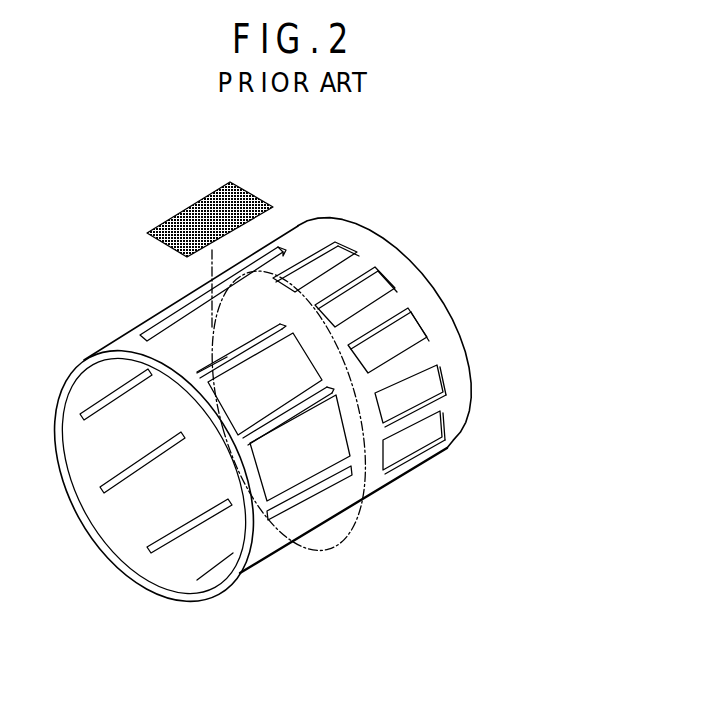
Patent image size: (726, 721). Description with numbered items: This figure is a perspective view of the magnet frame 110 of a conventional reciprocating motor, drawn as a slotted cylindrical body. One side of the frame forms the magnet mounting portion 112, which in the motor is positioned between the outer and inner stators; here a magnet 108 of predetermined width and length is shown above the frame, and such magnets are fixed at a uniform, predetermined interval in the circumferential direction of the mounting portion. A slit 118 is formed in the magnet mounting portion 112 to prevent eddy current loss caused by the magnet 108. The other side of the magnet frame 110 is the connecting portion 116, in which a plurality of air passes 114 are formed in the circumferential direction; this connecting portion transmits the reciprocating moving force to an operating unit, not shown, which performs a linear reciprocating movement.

The magnet 108 is at (252, 195).
The magnet frame 110 is at (274, 389).
The magnet mounting portion 112 is at (259, 554).
The air passes 114 is at (410, 387).
The connecting portion 116 is at (465, 382).
The slit 118 is at (213, 357).